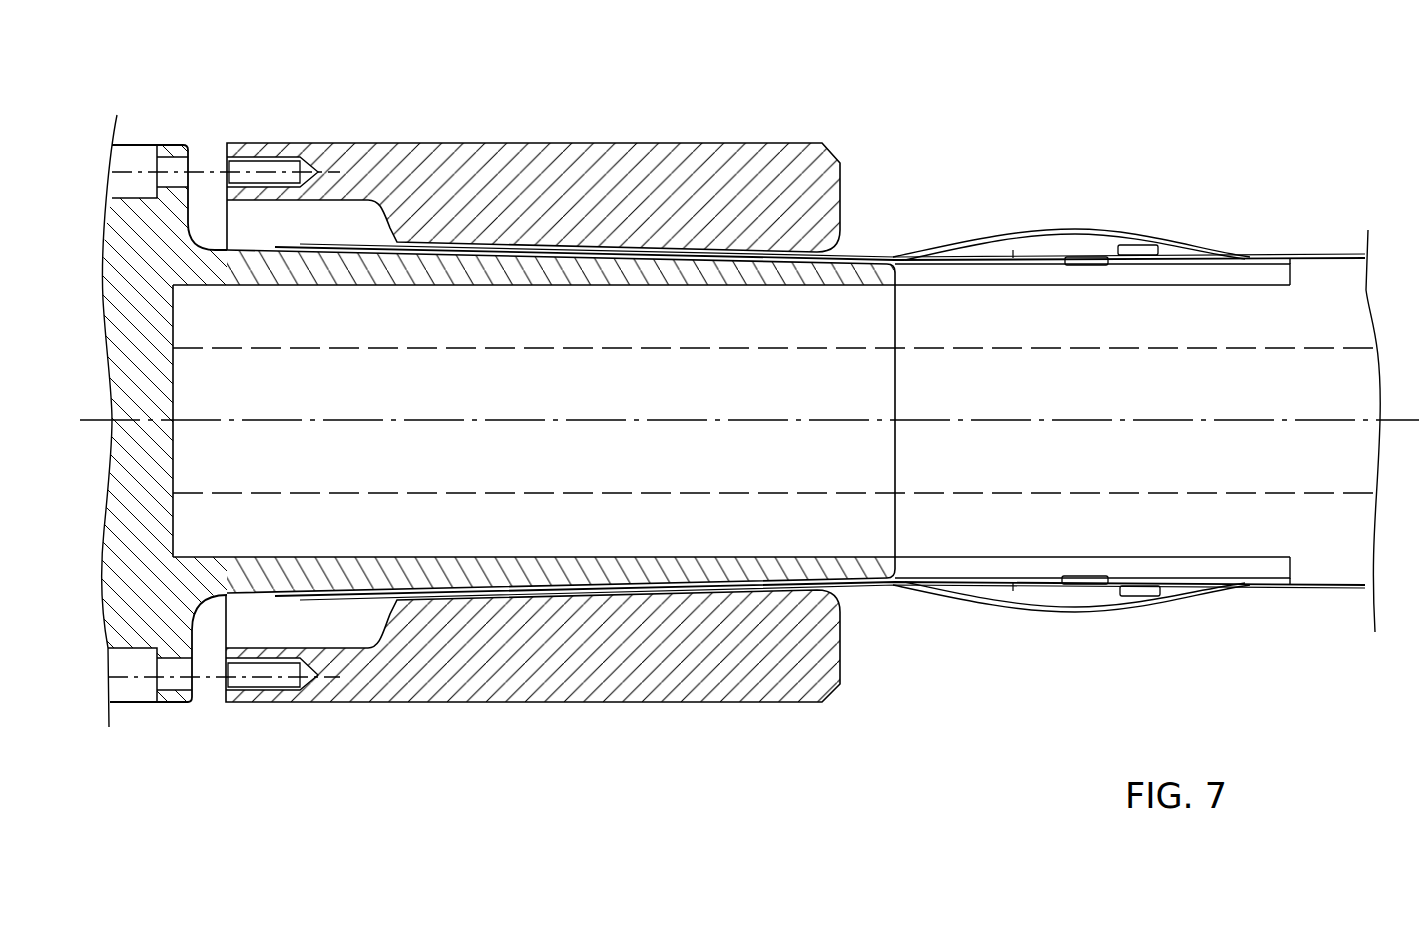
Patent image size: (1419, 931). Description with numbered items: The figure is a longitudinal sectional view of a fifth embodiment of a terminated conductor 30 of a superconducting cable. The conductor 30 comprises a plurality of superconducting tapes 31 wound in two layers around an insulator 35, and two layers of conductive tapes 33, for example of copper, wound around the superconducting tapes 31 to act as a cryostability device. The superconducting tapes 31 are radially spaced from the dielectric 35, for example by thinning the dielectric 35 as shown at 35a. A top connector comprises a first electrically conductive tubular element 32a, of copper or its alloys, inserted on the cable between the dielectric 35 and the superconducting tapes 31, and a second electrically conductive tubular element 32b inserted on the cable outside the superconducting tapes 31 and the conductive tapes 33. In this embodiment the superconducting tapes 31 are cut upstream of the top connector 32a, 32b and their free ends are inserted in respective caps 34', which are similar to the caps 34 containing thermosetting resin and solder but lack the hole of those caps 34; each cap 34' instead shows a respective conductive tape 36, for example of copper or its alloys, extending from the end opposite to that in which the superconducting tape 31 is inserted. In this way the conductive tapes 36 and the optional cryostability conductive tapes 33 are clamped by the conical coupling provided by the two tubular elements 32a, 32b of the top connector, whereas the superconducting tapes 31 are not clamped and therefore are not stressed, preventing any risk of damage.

The conductor 30 is at (1253, 268).
The superconducting tapes 31 is at (1180, 252).
The first electrically conductive tubular element 32a is at (178, 147).
The second electrically conductive tubular element 32b is at (267, 143).
The conductive tapes 33 is at (330, 243).
The cap 34 is at (702, 479).
The caps 34' is at (1094, 616).
The insulator 35 is at (1340, 296).
The thinned dielectric portion 35a is at (1280, 270).
The conductive tape 36 is at (297, 238).